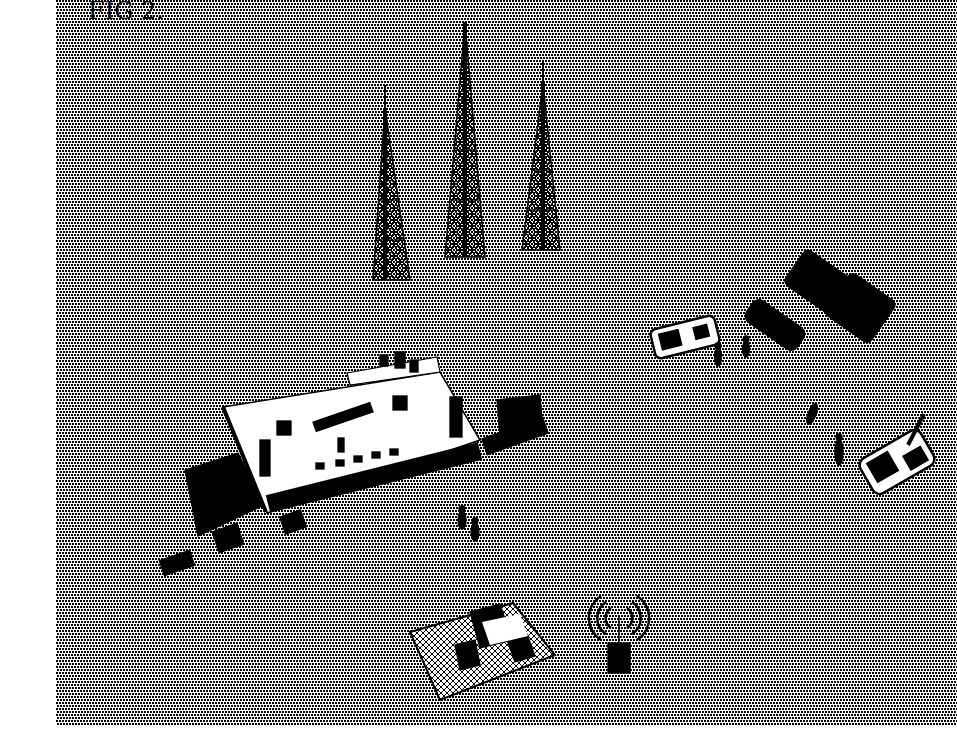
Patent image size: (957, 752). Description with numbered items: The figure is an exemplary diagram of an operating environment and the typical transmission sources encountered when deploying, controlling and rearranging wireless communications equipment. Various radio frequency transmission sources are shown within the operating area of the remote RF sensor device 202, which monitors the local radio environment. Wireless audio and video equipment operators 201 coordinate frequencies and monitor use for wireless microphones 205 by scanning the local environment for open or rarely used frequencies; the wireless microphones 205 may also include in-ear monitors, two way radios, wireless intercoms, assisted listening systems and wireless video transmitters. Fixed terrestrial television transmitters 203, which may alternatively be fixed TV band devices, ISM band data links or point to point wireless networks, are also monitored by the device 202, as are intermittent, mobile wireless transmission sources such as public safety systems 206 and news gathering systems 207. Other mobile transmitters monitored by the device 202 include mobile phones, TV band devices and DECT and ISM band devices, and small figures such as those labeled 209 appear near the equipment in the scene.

The wireless audio and video equipment operators 201 is at (461, 650).
The remote RF sensor device 202 is at (642, 640).
The fixed terrestrial television transmitters 203 is at (444, 151).
The wireless microphones 205 is at (352, 464).
The public safety systems 206 is at (773, 307).
The news gathering systems 207 is at (870, 449).
The personnel 209 is at (507, 524).